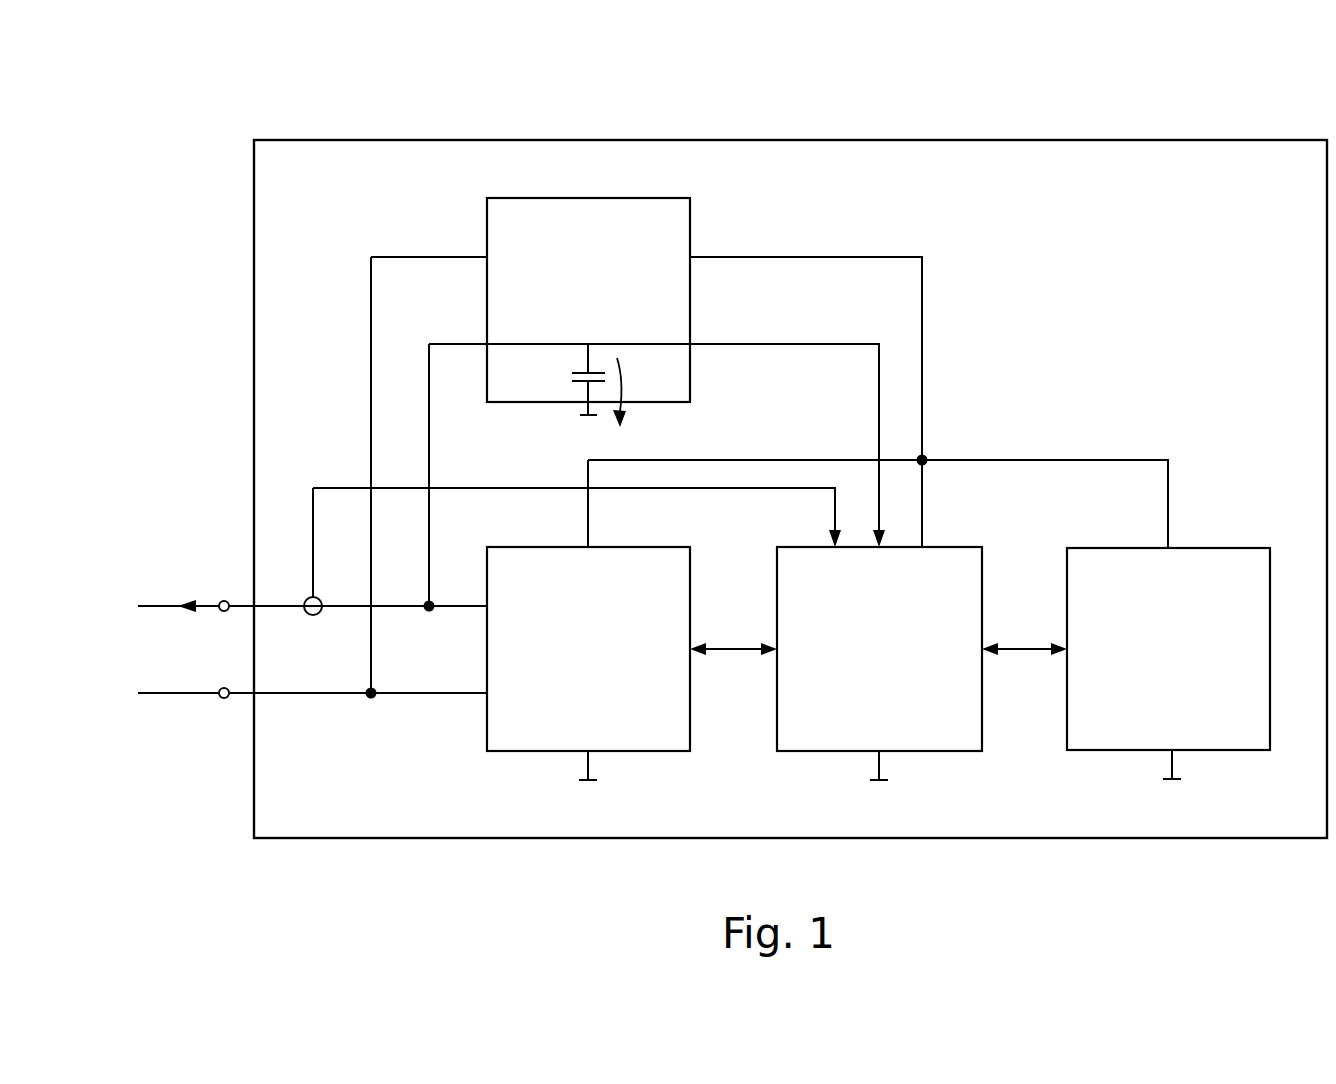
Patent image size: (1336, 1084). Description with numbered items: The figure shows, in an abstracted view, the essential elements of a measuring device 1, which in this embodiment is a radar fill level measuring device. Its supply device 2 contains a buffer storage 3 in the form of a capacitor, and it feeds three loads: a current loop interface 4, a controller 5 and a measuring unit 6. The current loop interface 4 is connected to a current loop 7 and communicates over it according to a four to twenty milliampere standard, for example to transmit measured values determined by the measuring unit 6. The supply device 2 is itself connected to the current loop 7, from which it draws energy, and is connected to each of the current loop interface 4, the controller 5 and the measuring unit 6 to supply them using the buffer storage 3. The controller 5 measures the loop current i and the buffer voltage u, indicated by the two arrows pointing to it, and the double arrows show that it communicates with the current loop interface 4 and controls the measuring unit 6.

The measuring device 1 is at (148, 85).
The supply device 2 is at (524, 243).
The buffer storage 3 is at (574, 353).
The current loop interface 4 is at (524, 592).
The controller 5 is at (815, 592).
The measuring unit 6 is at (1105, 592).
The current loop 7 is at (163, 588).